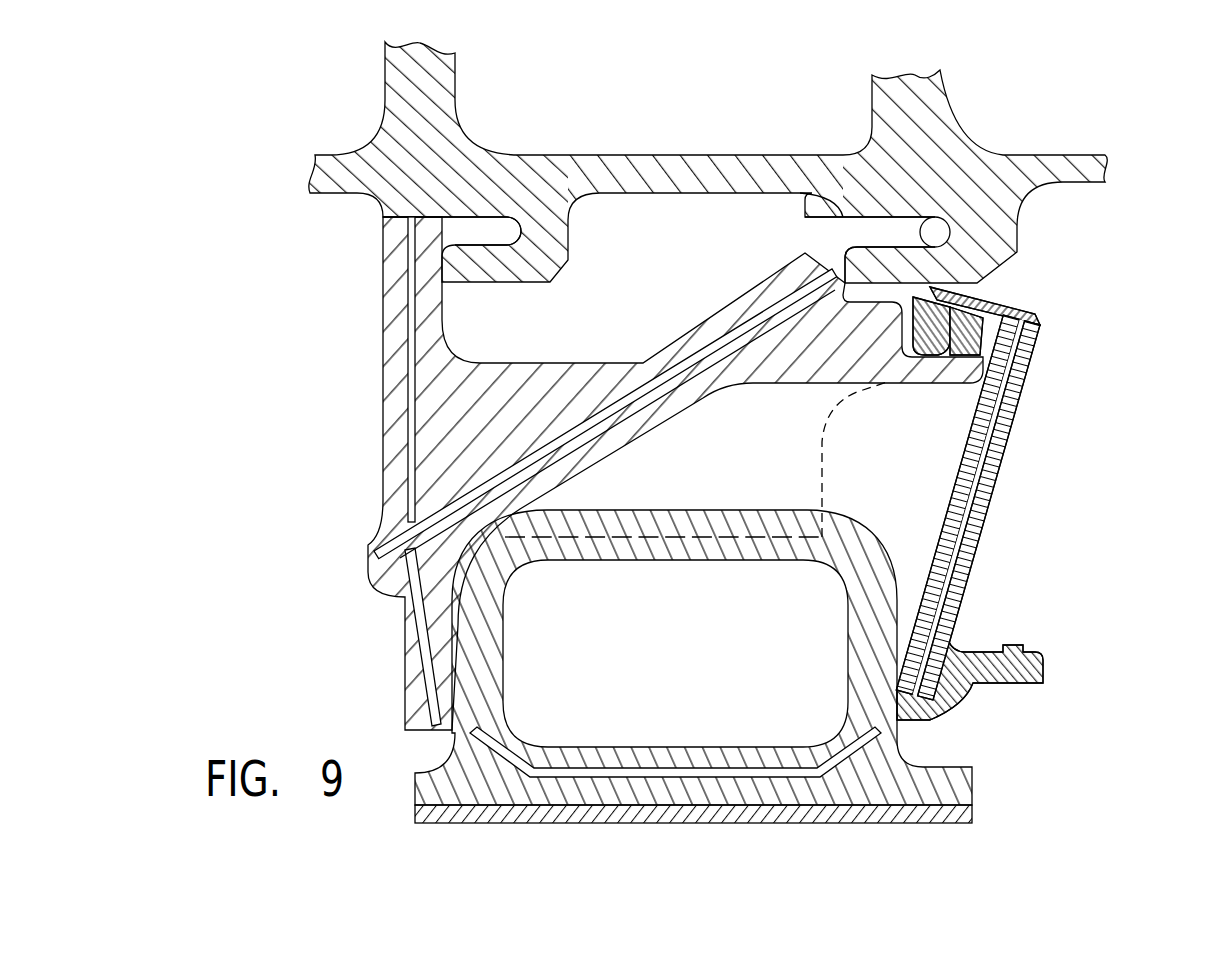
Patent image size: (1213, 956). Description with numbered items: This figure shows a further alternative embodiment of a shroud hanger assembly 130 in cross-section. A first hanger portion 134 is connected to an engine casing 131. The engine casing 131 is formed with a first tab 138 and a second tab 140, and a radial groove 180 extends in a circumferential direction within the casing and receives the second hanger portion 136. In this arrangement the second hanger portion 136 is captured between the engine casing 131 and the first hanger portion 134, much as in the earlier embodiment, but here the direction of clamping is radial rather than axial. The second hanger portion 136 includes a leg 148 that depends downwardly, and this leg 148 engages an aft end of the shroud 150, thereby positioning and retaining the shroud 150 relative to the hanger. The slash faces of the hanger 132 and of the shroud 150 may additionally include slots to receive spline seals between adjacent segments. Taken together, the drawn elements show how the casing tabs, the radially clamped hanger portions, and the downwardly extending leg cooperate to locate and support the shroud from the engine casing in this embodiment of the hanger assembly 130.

The hanger assembly 130 is at (713, 429).
The engine casing 131 is at (702, 126).
The hanger 132 is at (1048, 262).
The first hanger portion 134 is at (350, 440).
The second hanger portion 136 is at (1063, 320).
The first tab 138 is at (467, 230).
The second tab 140 is at (887, 232).
The leg 148 is at (1000, 478).
The shroud 150 is at (937, 777).
The radial groove 180 is at (895, 380).